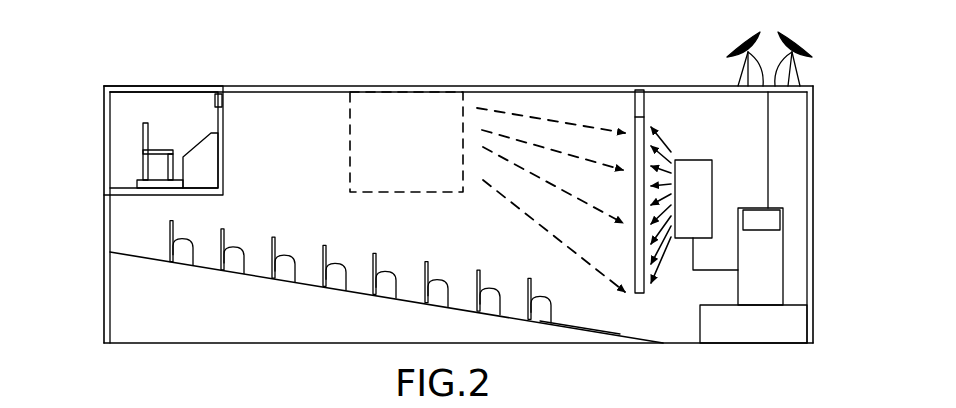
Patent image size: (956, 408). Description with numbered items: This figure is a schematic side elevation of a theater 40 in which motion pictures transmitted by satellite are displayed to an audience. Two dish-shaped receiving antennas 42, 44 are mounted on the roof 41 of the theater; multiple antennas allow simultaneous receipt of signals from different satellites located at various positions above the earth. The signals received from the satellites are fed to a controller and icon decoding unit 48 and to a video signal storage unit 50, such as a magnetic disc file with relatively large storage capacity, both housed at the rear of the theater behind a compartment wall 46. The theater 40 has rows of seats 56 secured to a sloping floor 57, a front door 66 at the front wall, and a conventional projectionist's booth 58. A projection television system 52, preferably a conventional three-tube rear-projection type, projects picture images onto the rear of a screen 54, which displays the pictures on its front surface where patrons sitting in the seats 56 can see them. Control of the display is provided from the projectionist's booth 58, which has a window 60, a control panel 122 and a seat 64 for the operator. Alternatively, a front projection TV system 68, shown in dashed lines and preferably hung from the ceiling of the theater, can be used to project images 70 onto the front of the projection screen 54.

The theater 40 is at (107, 42).
The roof 41 is at (298, 86).
The receiving antenna 42 is at (793, 38).
The receiving antenna 44 is at (745, 43).
The equipment compartment wall 46 is at (770, 135).
The controller and icon decoding unit 48 is at (770, 218).
The video signal storage unit 50 is at (767, 260).
The projection television system 52 is at (687, 158).
The screen 54 is at (640, 296).
The seats 56 is at (400, 244).
The sloping floor 57 is at (567, 323).
The projectionist's booth 58 is at (223, 172).
The window 60 is at (222, 122).
The seat 64 is at (163, 150).
The front door 66 is at (103, 202).
The front projection TV system 68 is at (372, 194).
The images 70 is at (568, 195).
The control panel 122 is at (193, 148).